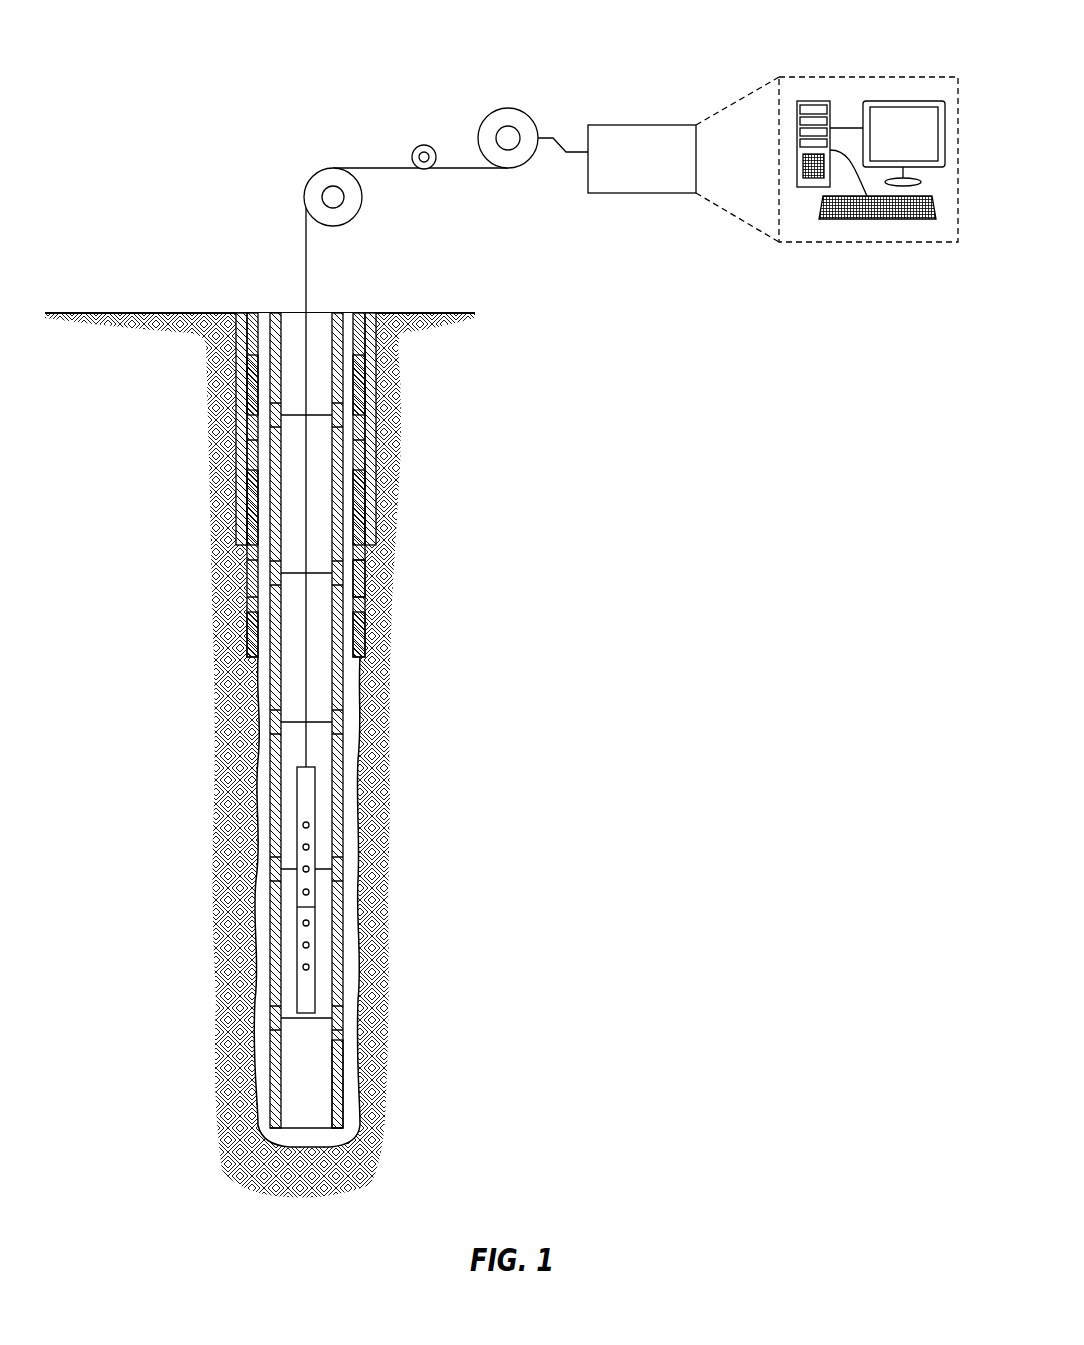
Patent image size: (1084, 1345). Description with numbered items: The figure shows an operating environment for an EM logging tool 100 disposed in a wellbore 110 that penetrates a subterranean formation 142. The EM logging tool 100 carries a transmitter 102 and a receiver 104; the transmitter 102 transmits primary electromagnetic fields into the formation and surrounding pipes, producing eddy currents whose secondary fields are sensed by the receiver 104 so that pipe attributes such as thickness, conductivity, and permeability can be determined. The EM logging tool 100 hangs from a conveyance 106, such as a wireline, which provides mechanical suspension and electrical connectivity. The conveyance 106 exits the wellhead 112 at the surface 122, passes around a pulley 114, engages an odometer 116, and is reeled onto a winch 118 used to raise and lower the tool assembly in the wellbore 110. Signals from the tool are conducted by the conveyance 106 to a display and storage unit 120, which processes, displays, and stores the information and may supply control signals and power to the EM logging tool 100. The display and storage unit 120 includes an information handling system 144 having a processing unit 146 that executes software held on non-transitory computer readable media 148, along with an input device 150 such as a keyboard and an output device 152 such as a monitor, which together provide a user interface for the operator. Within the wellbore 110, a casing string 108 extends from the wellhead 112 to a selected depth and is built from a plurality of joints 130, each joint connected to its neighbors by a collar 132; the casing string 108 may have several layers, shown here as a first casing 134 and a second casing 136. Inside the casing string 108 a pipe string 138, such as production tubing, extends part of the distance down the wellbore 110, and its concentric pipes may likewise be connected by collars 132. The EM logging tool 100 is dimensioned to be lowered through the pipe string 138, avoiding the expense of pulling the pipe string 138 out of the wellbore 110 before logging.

The EM logging tool 100 is at (304, 890).
The transmitter 102 is at (309, 825).
The receiver 104 is at (309, 847).
The conveyance 106 is at (308, 270).
The casing string 108 is at (226, 533).
The wellbore 110 is at (352, 672).
The wellhead 112 is at (292, 304).
The pulley 114 is at (307, 185).
The odometer 116 is at (423, 146).
The winch 118 is at (526, 108).
The display and storage unit 120 is at (655, 125).
The surface 122 is at (83, 313).
The joint 130 is at (250, 320).
The collar 132 is at (252, 358).
The first casing 134 is at (360, 572).
The second casing 136 is at (372, 528).
The pipe string 138 is at (345, 1085).
The subterranean formation 142 is at (551, 641).
The information handling system 144 is at (851, 77).
The processing unit 146 is at (812, 190).
The non-transitory computer readable media 148 is at (812, 100).
The input device 150 is at (872, 210).
The output device 152 is at (905, 100).